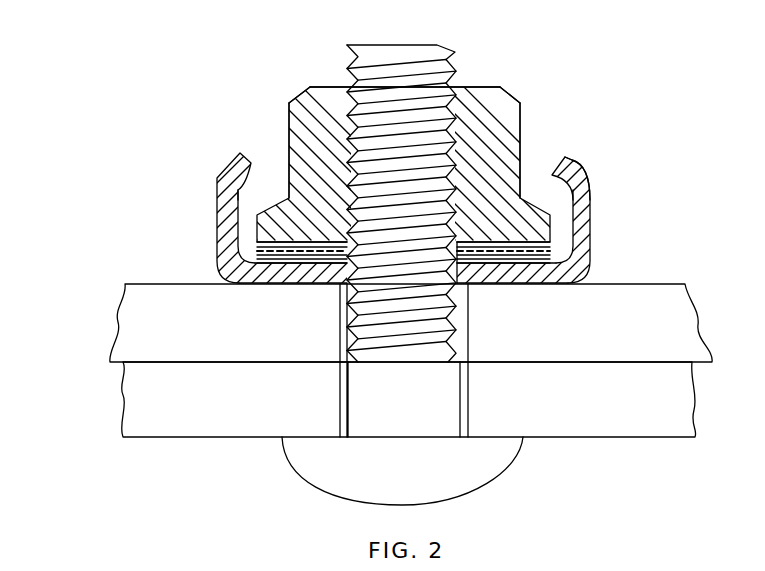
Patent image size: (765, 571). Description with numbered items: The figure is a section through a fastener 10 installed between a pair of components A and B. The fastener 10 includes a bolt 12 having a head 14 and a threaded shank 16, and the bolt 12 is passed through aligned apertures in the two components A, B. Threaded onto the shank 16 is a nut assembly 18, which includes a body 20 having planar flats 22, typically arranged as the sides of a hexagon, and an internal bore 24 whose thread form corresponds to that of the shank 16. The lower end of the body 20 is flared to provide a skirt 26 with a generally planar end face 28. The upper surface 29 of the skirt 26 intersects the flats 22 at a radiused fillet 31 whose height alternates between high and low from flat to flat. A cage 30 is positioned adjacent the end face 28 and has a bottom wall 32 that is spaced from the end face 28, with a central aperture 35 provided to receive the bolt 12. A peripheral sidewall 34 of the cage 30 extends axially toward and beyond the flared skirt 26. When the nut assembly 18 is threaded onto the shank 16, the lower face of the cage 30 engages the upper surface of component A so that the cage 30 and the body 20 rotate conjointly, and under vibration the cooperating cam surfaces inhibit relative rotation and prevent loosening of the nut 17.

The fastener 10 is at (253, 105).
The bolt 12 is at (453, 405).
The head 14 is at (497, 470).
The threaded shank 16 is at (348, 47).
The nut 17 is at (488, 102).
The nut assembly 18 is at (530, 117).
The body 20 is at (293, 132).
The planar flats 22 is at (288, 100).
The internal bore 24 is at (463, 86).
The skirt 26 is at (278, 230).
The end face 28 is at (560, 230).
The upper surface 29 is at (560, 152).
The cage 30 is at (592, 261).
The radiused fillet 31 is at (286, 198).
The bottom wall 32 is at (313, 272).
The peripheral sidewall 34 is at (216, 177).
The central aperture 35 is at (457, 290).
The component A is at (130, 322).
The component B is at (135, 402).